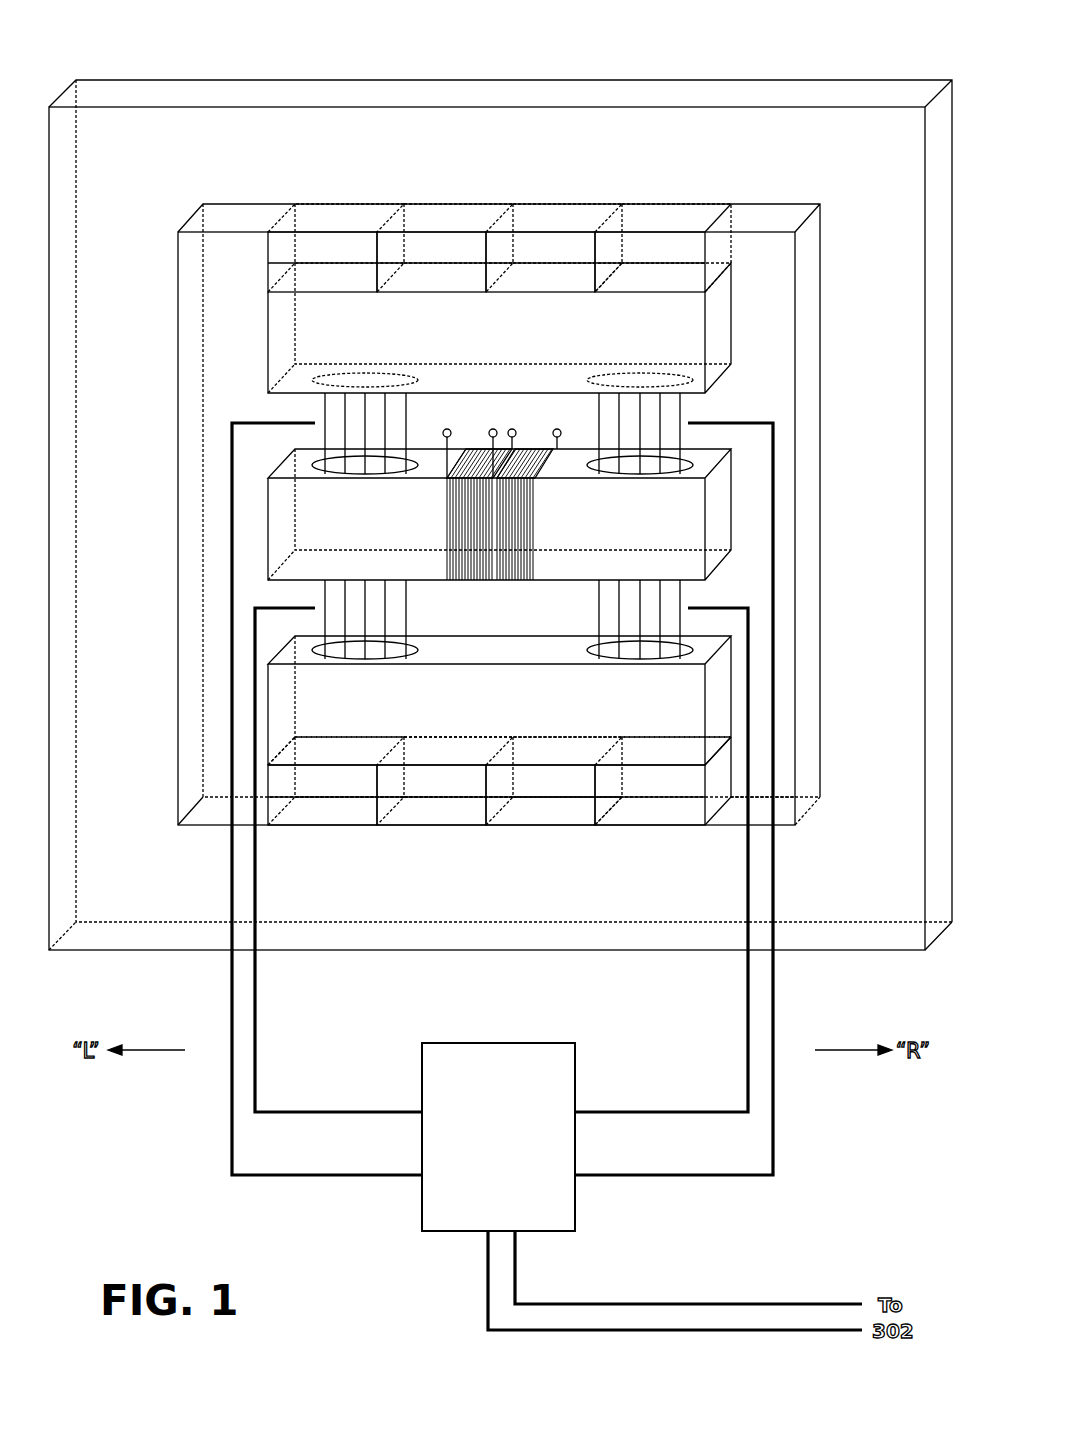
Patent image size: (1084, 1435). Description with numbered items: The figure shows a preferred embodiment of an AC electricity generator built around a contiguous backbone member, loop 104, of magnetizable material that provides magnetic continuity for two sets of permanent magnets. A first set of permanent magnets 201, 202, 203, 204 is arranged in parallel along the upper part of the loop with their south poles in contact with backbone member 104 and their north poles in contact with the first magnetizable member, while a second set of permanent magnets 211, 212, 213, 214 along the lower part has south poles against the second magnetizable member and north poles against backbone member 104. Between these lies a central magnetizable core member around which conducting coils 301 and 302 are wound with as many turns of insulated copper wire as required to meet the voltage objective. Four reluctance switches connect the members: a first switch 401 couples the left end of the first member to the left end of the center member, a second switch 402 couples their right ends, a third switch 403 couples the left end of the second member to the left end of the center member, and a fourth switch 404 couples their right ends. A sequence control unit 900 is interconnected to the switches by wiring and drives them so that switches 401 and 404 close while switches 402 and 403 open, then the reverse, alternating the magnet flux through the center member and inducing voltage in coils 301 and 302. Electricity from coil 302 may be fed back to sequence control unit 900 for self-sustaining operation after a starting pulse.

The backbone member 104 is at (188, 88).
The permanent magnet 201 is at (315, 243).
The permanent magnet 202 is at (422, 243).
The permanent magnet 203 is at (530, 243).
The permanent magnet 204 is at (638, 243).
The permanent magnet 211 is at (298, 808).
The permanent magnet 212 is at (407, 808).
The permanent magnet 213 is at (515, 808).
The permanent magnet 214 is at (623, 808).
The conducting coil 301 is at (463, 466).
The conducting coil 302 is at (515, 466).
The first reluctance switch 401 is at (325, 411).
The second reluctance switch 402 is at (688, 410).
The third reluctance switch 403 is at (406, 615).
The fourth reluctance switch 404 is at (599, 618).
The sequence control unit 900 is at (438, 1043).